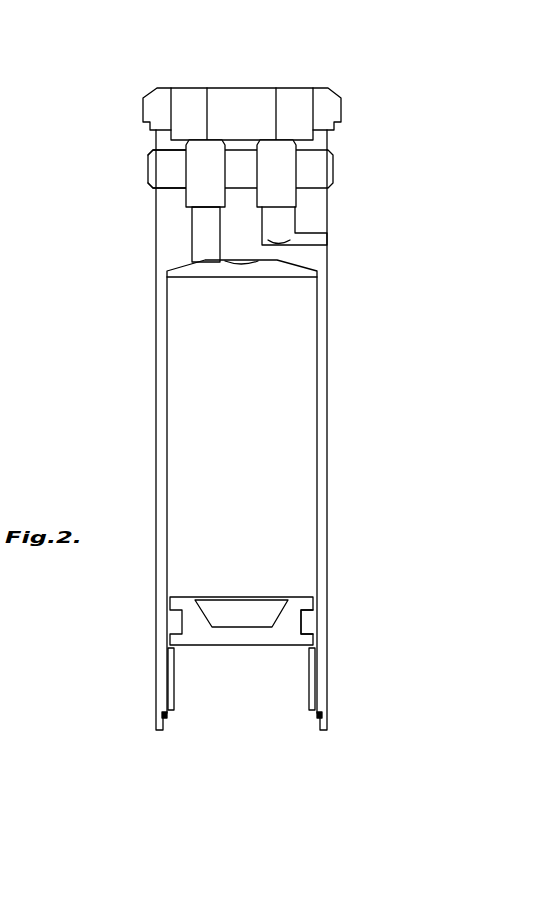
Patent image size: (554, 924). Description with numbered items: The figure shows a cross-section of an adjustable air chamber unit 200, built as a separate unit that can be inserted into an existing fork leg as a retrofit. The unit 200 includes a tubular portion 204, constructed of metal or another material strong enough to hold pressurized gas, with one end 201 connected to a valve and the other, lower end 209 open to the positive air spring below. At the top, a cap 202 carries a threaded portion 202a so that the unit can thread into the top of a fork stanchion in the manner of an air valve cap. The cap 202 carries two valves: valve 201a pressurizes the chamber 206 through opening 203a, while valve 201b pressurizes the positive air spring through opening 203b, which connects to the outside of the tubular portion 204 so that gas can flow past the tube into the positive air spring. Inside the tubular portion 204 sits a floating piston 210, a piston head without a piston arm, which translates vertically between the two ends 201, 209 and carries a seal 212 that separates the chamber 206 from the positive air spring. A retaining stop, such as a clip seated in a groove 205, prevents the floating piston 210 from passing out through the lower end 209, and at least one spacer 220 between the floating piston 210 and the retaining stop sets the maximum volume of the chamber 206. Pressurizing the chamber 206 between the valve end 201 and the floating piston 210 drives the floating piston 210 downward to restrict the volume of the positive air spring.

The adjustable air chamber unit 200 is at (237, 56).
The valve end 201 is at (203, 337).
The valve 201a is at (188, 88).
The valve 201b is at (292, 88).
The cap 202 is at (333, 165).
The threaded portion 202a is at (173, 172).
The opening 203a is at (207, 262).
The opening 203b is at (327, 240).
The tubular portion 204 is at (328, 453).
The groove 205 is at (313, 718).
The chamber 206 is at (253, 440).
The lower end 209 is at (272, 695).
The floating piston 210 is at (217, 596).
The seal 212 is at (304, 622).
The spacer 220 is at (166, 682).